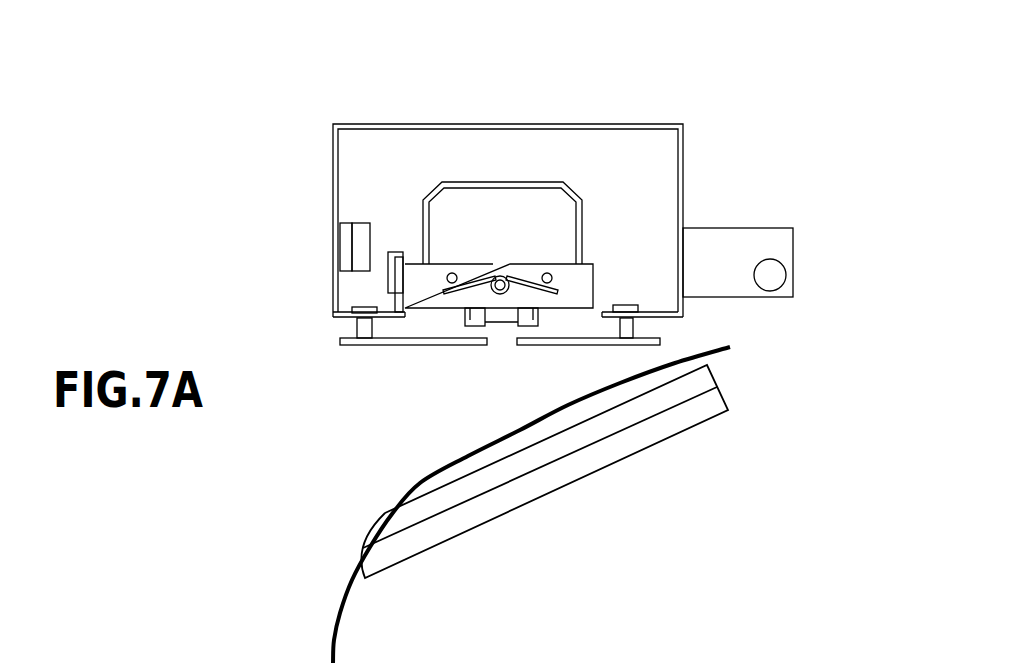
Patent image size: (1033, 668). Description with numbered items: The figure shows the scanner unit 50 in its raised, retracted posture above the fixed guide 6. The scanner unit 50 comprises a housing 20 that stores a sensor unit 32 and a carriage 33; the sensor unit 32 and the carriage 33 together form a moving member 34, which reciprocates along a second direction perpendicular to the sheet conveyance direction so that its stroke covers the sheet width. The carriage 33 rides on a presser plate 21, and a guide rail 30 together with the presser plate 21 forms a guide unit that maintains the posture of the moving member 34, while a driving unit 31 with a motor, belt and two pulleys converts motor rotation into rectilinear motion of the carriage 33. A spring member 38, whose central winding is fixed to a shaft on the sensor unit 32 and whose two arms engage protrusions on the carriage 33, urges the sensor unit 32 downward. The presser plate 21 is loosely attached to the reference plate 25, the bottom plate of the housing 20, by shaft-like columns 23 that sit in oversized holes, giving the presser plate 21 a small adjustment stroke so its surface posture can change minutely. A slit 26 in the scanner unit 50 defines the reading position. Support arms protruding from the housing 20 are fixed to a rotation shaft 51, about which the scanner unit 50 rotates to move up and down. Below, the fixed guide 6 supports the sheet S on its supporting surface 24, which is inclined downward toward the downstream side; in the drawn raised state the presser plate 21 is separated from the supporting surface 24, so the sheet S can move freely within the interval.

The fixed guide 6 is at (544, 471).
The housing 20 is at (685, 172).
The presser plate 21 is at (413, 345).
The column 23 is at (363, 338).
The supporting surface 24 is at (526, 451).
The reference plate 25 is at (392, 312).
The slit 26 is at (499, 345).
The guide rail 30 is at (398, 281).
The driving unit 31 is at (360, 247).
The sensor unit 32 is at (538, 208).
The carriage 33 is at (582, 278).
The moving member 34 is at (532, 164).
The spring member 38 is at (500, 276).
The scanner unit 50 is at (419, 106).
The rotation shaft 51 is at (777, 273).
The sheet S is at (337, 605).